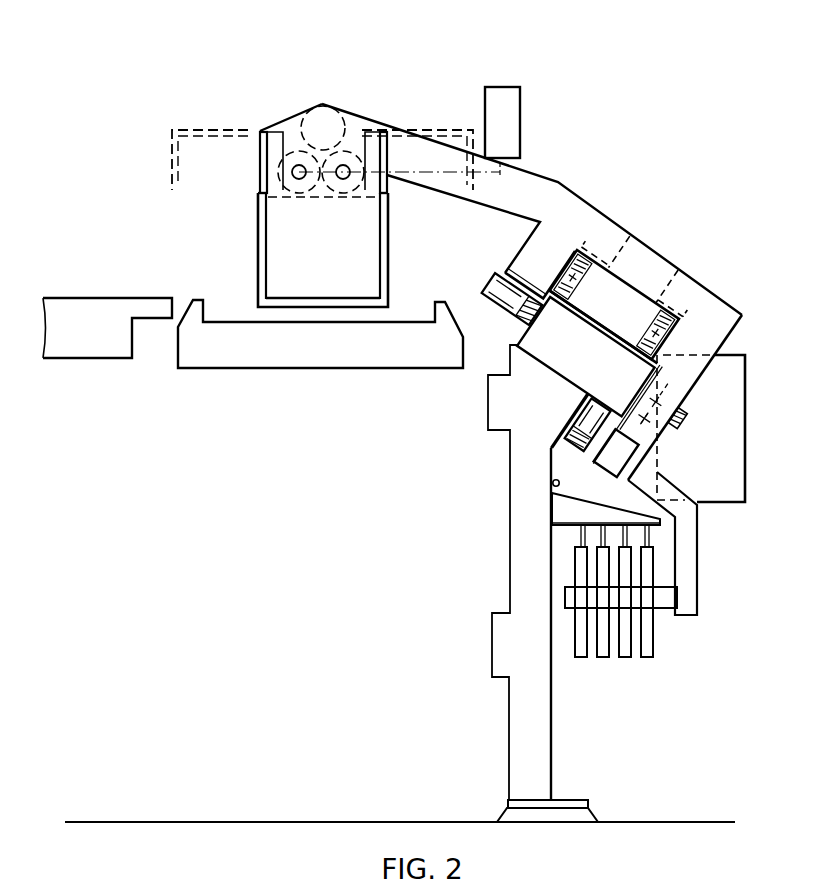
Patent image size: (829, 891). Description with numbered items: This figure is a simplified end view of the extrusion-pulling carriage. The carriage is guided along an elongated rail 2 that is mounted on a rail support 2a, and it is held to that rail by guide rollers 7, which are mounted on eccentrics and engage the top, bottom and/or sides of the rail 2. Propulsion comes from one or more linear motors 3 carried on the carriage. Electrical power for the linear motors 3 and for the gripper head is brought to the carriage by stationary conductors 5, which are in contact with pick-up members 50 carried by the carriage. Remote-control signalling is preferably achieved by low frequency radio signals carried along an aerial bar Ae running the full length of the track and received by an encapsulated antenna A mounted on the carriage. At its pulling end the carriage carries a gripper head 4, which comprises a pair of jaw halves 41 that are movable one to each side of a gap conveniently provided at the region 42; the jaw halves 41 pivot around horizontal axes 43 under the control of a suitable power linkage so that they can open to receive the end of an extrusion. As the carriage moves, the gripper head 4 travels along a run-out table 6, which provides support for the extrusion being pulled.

The rail 2 is at (586, 354).
The rail support 2a is at (508, 722).
The linear motor 3 is at (614, 304).
The gripper head 4 is at (336, 179).
The stationary conductors 5 is at (602, 537).
The run-out table 6 is at (253, 333).
The guide rollers 7 is at (580, 263).
The jaw halves 41 is at (193, 131).
The region of the gap 42 is at (320, 298).
The horizontal axes 43 is at (298, 168).
The pick-up members 50 is at (583, 660).
The antenna A is at (614, 457).
The aerial bar Ae is at (552, 485).